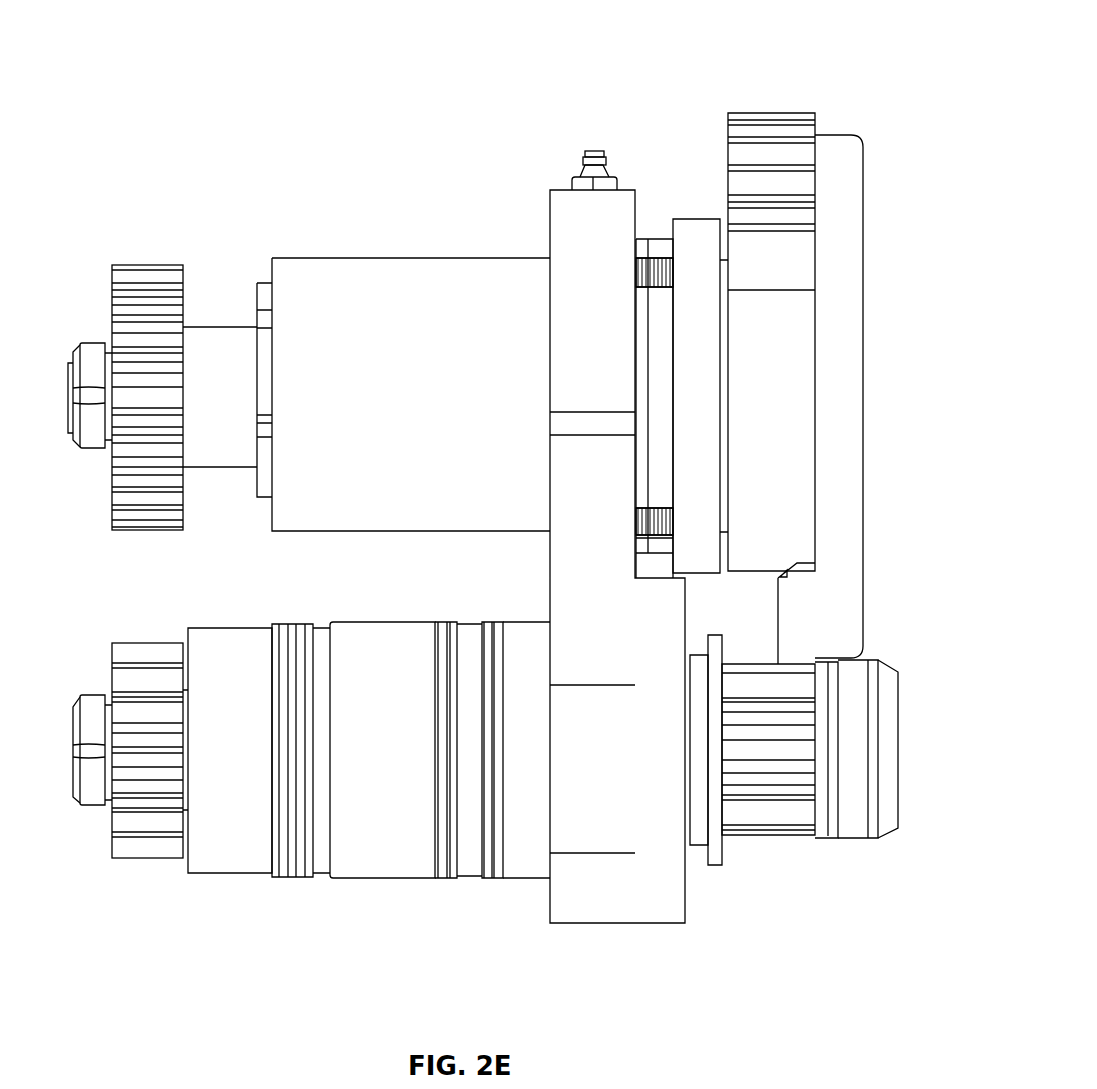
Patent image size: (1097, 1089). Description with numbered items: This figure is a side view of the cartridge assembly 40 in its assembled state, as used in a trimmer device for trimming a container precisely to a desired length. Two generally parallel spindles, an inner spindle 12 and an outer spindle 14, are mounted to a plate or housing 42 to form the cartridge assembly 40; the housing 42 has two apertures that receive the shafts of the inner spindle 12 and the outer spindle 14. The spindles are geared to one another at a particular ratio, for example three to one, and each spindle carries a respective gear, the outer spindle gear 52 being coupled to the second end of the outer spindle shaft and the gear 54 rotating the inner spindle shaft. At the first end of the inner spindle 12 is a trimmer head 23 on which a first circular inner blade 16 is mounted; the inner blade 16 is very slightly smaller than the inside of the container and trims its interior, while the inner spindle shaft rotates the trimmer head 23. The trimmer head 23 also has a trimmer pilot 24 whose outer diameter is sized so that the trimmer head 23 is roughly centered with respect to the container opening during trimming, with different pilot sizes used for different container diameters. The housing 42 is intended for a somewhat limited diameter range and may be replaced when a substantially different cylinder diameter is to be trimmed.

The inner spindle 12 is at (368, 890).
The outer spindle 14 is at (122, 234).
The first circular inner blade 16 is at (813, 836).
The trimmer head 23 is at (888, 841).
The trimmer pilot 24 is at (905, 811).
The cartridge assembly 40 is at (850, 68).
The housing 42 is at (565, 190).
The outer spindle gear 52 is at (110, 479).
The gear 54 is at (110, 824).